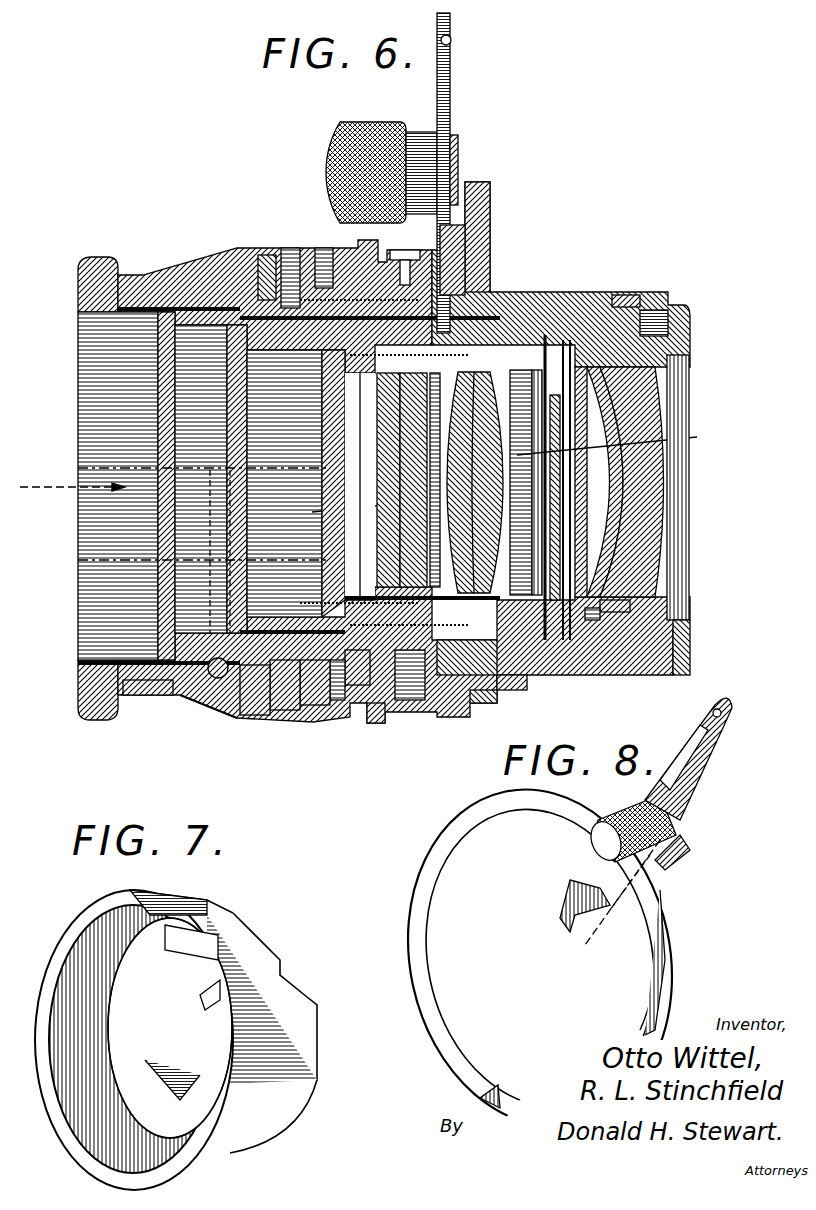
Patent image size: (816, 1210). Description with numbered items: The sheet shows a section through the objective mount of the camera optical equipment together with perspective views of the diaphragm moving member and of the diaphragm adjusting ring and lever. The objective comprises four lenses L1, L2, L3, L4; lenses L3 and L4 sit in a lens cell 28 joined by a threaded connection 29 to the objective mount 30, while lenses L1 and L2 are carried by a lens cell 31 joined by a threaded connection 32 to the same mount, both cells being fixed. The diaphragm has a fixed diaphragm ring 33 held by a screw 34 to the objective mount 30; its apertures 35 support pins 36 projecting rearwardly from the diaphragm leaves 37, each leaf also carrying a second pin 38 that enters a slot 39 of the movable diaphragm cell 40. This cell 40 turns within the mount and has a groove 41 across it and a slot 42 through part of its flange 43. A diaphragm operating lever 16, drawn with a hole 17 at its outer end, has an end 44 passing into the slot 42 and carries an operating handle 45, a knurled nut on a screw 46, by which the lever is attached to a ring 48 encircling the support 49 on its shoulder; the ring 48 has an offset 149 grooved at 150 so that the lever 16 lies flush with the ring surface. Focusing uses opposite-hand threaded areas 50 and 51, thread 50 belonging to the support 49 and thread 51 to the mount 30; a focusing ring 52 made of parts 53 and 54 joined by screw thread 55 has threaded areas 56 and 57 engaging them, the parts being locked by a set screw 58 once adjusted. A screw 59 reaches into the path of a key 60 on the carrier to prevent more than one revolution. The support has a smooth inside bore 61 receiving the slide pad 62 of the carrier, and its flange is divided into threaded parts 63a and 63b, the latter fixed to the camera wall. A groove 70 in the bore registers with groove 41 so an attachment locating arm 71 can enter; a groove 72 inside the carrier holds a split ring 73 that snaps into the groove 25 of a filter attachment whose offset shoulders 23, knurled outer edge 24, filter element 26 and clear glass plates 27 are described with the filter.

In FIG. 6, the diaphragm operating lever 16 is at (440, 94).
In FIG. 8, the diaphragm operating lever 16 is at (705, 766).
In FIG. 6, the pivot hole 17 is at (451, 40).
In FIG. 8, the pivot hole 17 is at (722, 714).
In FIG. 6, the offset shoulders 23 is at (118, 486).
In FIG. 6, the knurled outer edge 24 is at (175, 510).
In FIG. 6, the groove 25 is at (201, 480).
In FIG. 6, the filter element 26 is at (385, 528).
In FIG. 6, the clear glass plates 27 is at (336, 512).
In FIG. 6, the lens cell 28 is at (680, 590).
In FIG. 6, the threaded connection 29 is at (650, 655).
In FIG. 6, the objective mount 30 is at (620, 310).
In FIG. 6, the lens cell 31 is at (336, 483).
In FIG. 6, the threaded connection 32 is at (330, 494).
In FIG. 6, the fixed diaphragm ring 33 is at (545, 345).
In FIG. 6, the screw 34 is at (548, 310).
In FIG. 6, the apertures 35 is at (610, 650).
In FIG. 6, the pins 36 is at (590, 650).
In FIG. 6, the diaphragm leaves 37 is at (533, 512).
In FIG. 6, the second pin 38 is at (528, 340).
In FIG. 6, the slot 39 is at (536, 340).
In FIG. 7, the slot 39 is at (165, 1065).
In FIG. 6, the movable diaphragm cell 40 is at (622, 439).
In FIG. 7, the movable diaphragm cell 40 is at (258, 935).
In FIG. 7, the groove 41 is at (208, 908).
In FIG. 7, the slot 42 is at (200, 975).
In FIG. 7, the flange 43 is at (215, 1000).
In FIG. 8, the end 44 is at (568, 912).
In FIG. 6, the operating handle 45 is at (372, 130).
In FIG. 8, the operating handle 45 is at (631, 821).
In FIG. 6, the screw 46 is at (456, 140).
In FIG. 6, the ring 48 is at (455, 718).
In FIG. 8, the ring 48 is at (440, 845).
In FIG. 6, the support 49 is at (440, 230).
In FIG. 6, the threaded area 50 is at (350, 705).
In FIG. 8, the threaded area 50 is at (682, 822).
In FIG. 6, the threaded area 51 is at (250, 720).
In FIG. 6, the focusing ring 52 is at (330, 720).
In FIG. 6, the focusing ring part 53 is at (280, 722).
In FIG. 6, the focusing ring part 54 is at (405, 712).
In FIG. 6, the screw thread 55 is at (305, 722).
In FIG. 6, the threaded area 56 is at (215, 700).
In FIG. 6, the threaded area 57 is at (372, 724).
In FIG. 6, the set screw 58 is at (322, 250).
In FIG. 6, the screw 59 is at (290, 250).
In FIG. 6, the key 60 is at (265, 258).
In FIG. 6, the smooth inside bore 61 is at (670, 333).
In FIG. 6, the slide pad 62 is at (625, 296).
In FIG. 6, the flange part 63a is at (478, 715).
In FIG. 6, the flange part 63b is at (482, 198).
In FIG. 6, the groove 70 is at (408, 262).
In FIG. 6, the attachment locating arm 71 is at (400, 252).
In FIG. 6, the groove 72 is at (230, 720).
In FIG. 6, the split ring 73 is at (178, 700).
In FIG. 8, the offset 149 is at (650, 865).
In FIG. 8, the groove 150 is at (625, 890).
In FIG. 6, the lens L1 is at (386, 452).
In FIG. 6, the lens L2 is at (398, 478).
In FIG. 6, the lens L3 is at (593, 462).
In FIG. 6, the lens L4 is at (612, 487).